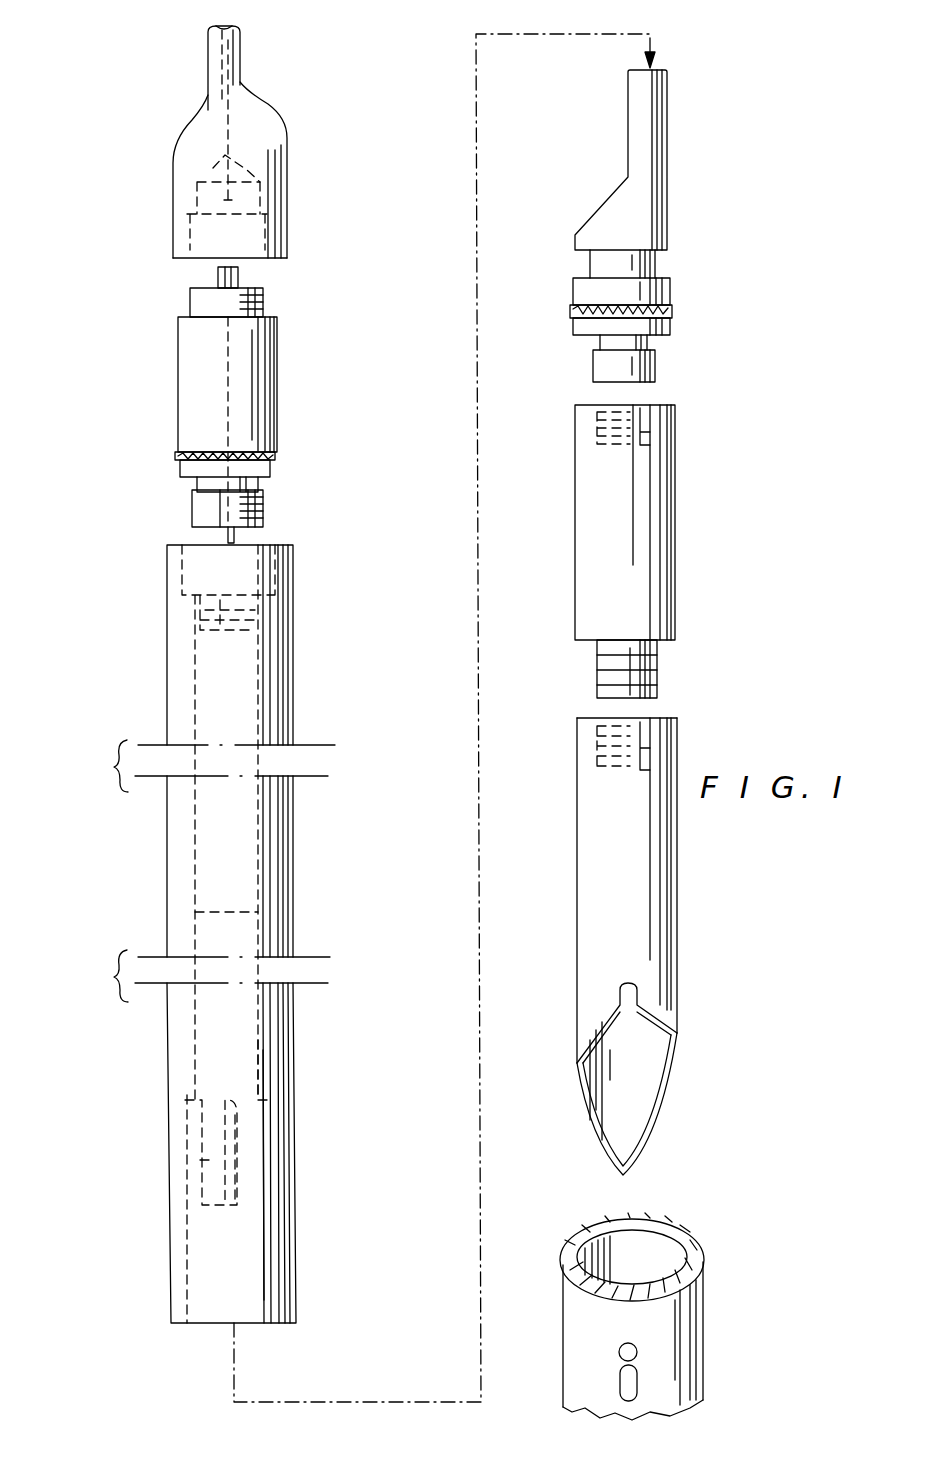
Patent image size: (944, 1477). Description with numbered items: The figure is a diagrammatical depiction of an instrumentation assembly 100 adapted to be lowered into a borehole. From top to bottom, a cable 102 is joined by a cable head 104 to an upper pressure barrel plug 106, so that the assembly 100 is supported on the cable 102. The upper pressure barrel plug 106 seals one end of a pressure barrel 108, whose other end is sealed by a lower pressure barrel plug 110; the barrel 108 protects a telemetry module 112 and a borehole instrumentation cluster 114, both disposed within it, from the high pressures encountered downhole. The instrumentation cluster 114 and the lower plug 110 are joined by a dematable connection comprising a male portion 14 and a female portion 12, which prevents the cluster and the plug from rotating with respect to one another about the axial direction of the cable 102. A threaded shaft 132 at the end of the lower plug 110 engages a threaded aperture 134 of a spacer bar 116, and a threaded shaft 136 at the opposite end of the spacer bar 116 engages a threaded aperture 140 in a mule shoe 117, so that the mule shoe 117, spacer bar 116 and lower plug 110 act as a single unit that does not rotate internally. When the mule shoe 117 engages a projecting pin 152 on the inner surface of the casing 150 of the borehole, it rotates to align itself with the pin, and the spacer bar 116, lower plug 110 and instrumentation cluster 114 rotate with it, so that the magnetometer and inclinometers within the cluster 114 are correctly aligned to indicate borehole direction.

The instrumentation assembly 100 is at (150, 336).
The cable 102 is at (242, 68).
The cable head 104 is at (289, 176).
The upper pressure barrel plug 106 is at (278, 396).
The pressure barrel 108 is at (293, 702).
The telemetry module 112 is at (245, 858).
The borehole instrumentation cluster 114 is at (245, 1045).
The female portion 12 is at (185, 1168).
The male portion 14 is at (657, 145).
The lower pressure barrel plug 110 is at (672, 293).
The threaded shaft 132 is at (657, 370).
The threaded aperture 134 is at (651, 405).
The spacer bar 116 is at (675, 543).
The threaded shaft 136 is at (657, 675).
The threaded aperture 140 is at (652, 720).
The mule shoe 117 is at (668, 968).
The borehole casing 150 is at (700, 1307).
The projecting pin 152 is at (640, 1385).